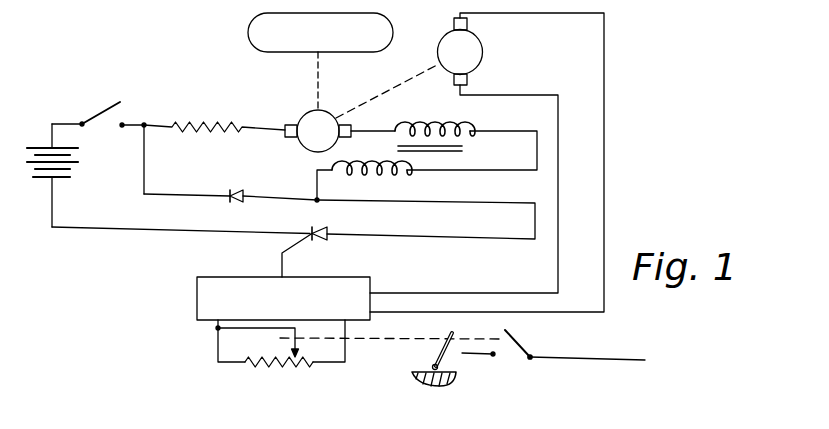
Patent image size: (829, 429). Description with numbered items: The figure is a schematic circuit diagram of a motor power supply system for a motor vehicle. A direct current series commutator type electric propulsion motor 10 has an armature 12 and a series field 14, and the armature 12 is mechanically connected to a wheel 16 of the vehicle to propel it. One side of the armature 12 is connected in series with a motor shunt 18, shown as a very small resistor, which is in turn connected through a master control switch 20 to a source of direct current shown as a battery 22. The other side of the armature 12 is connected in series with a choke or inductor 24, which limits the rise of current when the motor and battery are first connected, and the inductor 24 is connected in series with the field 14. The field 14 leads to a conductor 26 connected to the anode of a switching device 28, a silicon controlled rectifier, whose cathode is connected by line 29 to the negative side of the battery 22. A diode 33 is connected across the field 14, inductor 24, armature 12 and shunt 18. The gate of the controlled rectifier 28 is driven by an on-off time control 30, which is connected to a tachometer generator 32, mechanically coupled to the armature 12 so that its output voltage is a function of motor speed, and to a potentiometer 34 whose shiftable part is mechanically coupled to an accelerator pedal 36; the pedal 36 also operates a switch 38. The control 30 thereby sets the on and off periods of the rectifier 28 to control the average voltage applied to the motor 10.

The electric propulsion motor 10 is at (296, 153).
The armature 12 is at (331, 111).
The series field 14 is at (375, 176).
The wheel 16 is at (248, 24).
The motor shunt 18 is at (197, 127).
The master control switch 20 is at (93, 116).
The battery 22 is at (72, 174).
The inductor 24 is at (452, 125).
The conductor 26 is at (441, 238).
The switching device 28 is at (331, 239).
The line 29 is at (125, 231).
The on-off time control 30 is at (373, 284).
The tachometer generator 32 is at (483, 40).
The diode 33 is at (229, 206).
The potentiometer 34 is at (285, 365).
The accelerator pedal 36 is at (432, 366).
The switch 38 is at (520, 345).